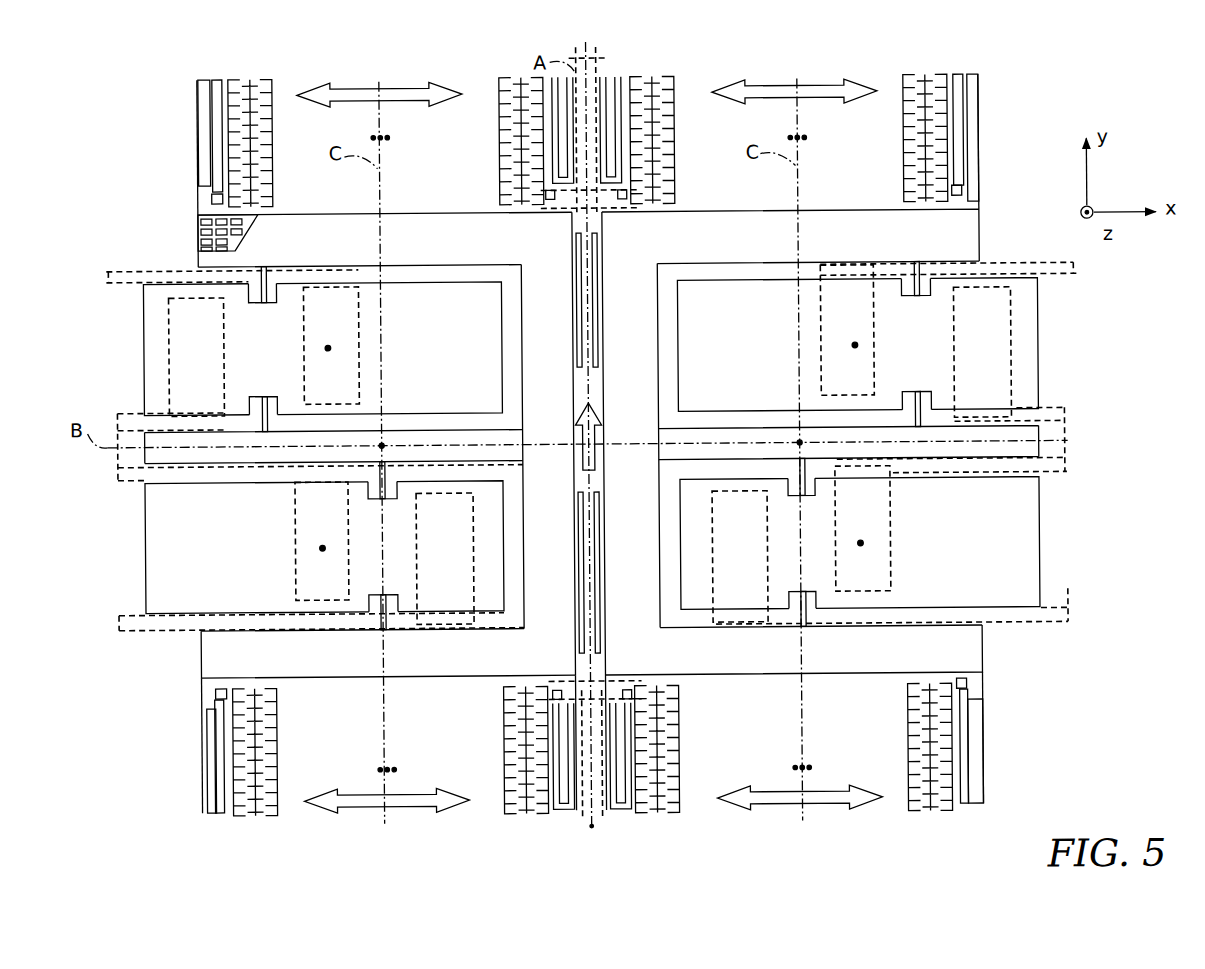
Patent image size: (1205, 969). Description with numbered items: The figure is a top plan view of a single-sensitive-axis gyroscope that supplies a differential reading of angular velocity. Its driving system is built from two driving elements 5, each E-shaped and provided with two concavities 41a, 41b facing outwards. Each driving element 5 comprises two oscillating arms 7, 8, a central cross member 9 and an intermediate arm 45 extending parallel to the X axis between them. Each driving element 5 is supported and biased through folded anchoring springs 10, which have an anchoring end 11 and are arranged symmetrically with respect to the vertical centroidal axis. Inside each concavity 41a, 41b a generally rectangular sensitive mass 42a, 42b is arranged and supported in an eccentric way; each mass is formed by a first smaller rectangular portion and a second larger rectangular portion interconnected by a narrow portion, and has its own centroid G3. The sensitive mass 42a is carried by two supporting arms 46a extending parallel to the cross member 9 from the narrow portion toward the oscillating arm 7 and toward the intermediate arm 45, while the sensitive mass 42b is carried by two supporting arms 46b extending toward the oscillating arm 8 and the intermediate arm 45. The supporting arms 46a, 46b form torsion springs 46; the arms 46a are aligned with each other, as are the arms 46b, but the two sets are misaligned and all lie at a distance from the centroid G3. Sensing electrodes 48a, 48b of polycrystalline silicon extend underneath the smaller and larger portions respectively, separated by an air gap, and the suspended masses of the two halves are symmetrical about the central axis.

The driving element 5 is at (196, 232).
The oscillating arm 7 is at (516, 252).
The oscillating arm 8 is at (546, 662).
The central cross member 9 is at (541, 344).
The anchoring spring 10 is at (198, 116).
The anchoring end 11 is at (213, 196).
The concavity 41a is at (442, 262).
The concavity 41b is at (496, 632).
The sensitive mass 42a is at (608, 346).
The sensitive mass 42b is at (591, 545).
The intermediate arm 45 is at (505, 452).
The spring beam 46 is at (797, 475).
The supporting arm 46a is at (270, 280).
The supporting arm 46b is at (387, 498).
The sensing electrode 48a is at (182, 374).
The sensing electrode 48b is at (362, 375).
The centroid G3 is at (335, 344).